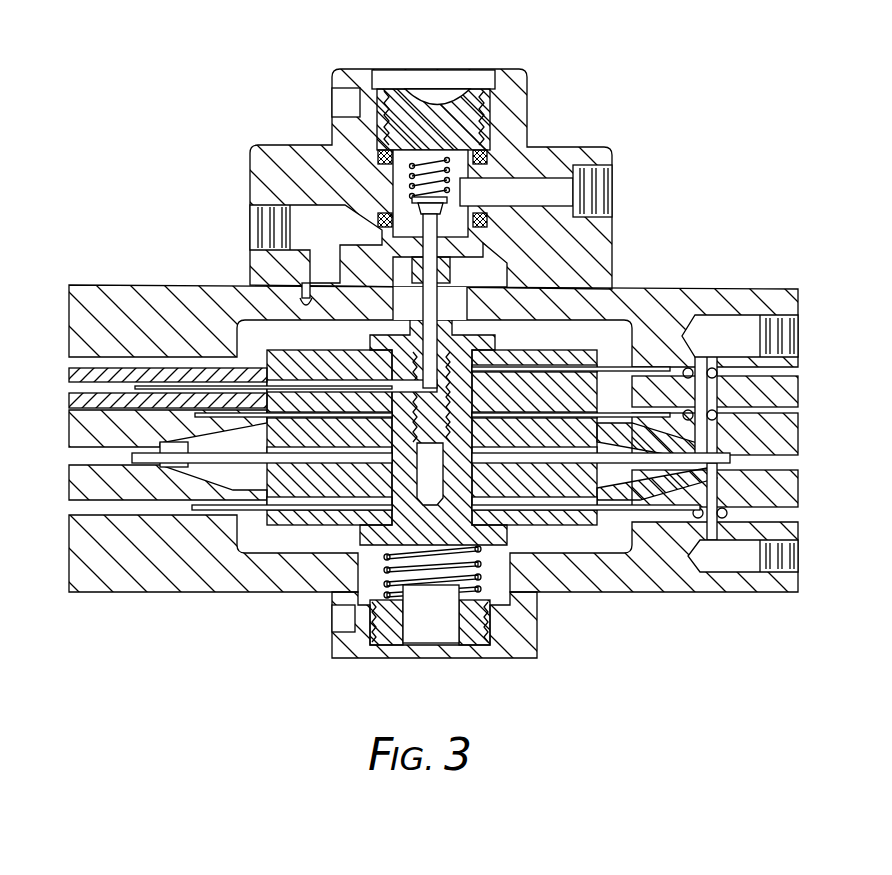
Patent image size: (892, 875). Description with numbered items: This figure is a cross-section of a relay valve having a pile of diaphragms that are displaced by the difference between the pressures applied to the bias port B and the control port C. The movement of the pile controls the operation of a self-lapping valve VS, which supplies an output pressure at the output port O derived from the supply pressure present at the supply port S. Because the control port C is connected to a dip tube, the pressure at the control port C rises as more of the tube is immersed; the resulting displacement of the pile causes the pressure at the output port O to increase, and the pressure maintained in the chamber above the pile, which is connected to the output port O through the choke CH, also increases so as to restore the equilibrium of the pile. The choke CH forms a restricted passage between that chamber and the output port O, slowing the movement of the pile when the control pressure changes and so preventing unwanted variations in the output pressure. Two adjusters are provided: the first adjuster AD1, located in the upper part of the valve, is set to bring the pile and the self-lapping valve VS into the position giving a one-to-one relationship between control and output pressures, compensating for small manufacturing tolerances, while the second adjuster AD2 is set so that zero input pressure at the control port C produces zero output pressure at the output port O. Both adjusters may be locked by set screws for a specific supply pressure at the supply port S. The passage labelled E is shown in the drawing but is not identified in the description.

The first adjuster AD1 is at (447, 52).
The second adjuster AD2 is at (482, 665).
The output port O is at (238, 224).
The choke CH is at (300, 300).
The electrode passage / E port E is at (152, 388).
The supply port S is at (618, 183).
The self-lapping valve VS is at (455, 250).
The bias port B is at (800, 331).
The control port C is at (800, 556).